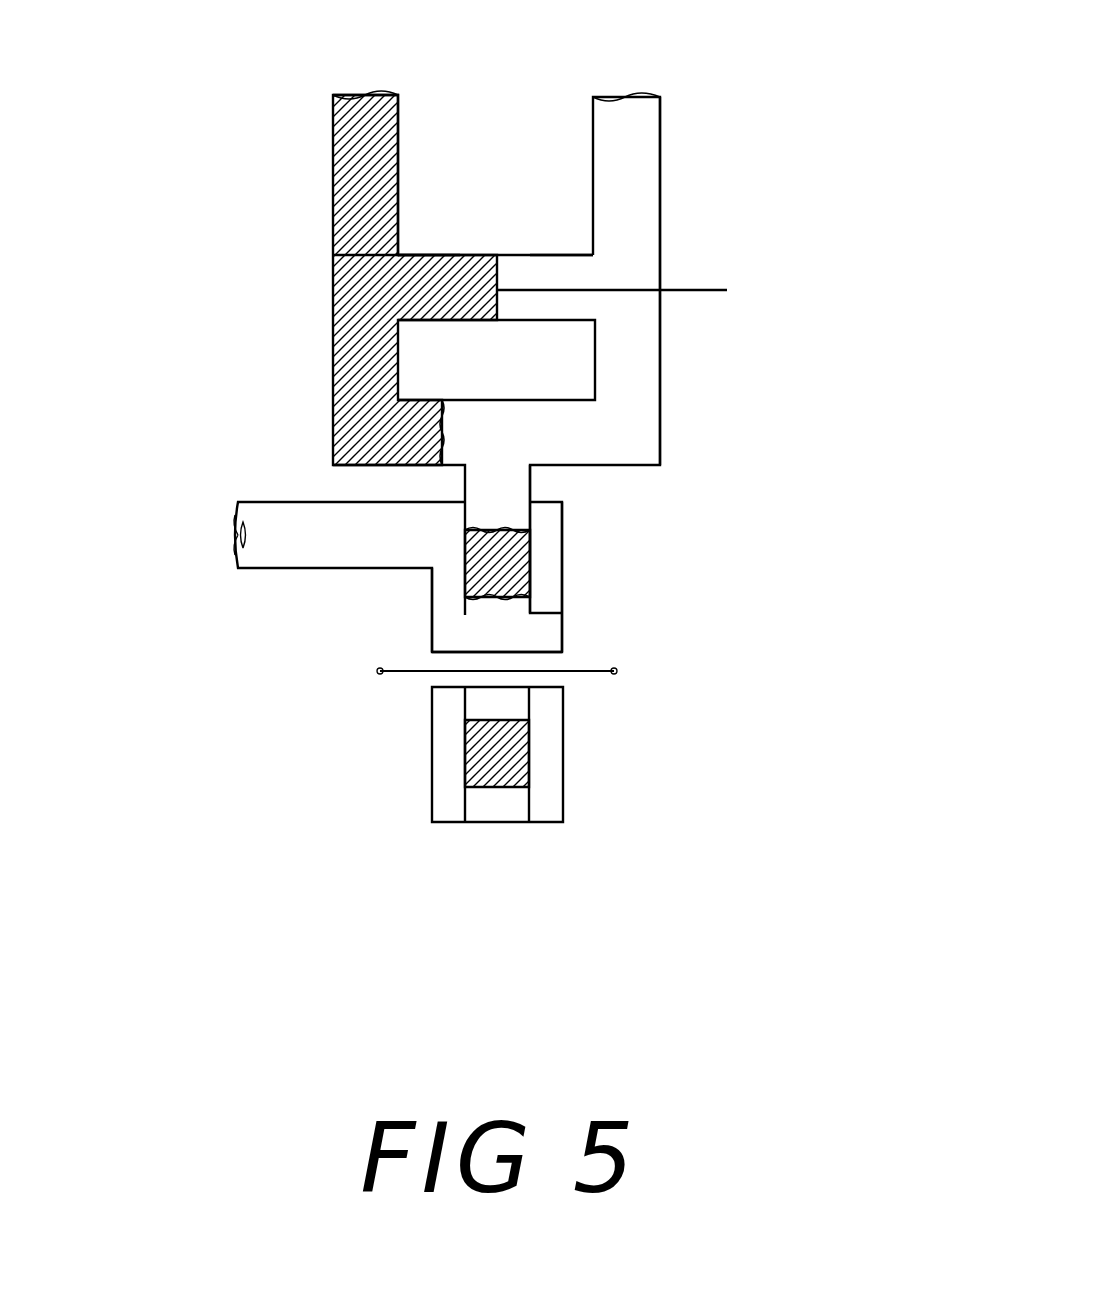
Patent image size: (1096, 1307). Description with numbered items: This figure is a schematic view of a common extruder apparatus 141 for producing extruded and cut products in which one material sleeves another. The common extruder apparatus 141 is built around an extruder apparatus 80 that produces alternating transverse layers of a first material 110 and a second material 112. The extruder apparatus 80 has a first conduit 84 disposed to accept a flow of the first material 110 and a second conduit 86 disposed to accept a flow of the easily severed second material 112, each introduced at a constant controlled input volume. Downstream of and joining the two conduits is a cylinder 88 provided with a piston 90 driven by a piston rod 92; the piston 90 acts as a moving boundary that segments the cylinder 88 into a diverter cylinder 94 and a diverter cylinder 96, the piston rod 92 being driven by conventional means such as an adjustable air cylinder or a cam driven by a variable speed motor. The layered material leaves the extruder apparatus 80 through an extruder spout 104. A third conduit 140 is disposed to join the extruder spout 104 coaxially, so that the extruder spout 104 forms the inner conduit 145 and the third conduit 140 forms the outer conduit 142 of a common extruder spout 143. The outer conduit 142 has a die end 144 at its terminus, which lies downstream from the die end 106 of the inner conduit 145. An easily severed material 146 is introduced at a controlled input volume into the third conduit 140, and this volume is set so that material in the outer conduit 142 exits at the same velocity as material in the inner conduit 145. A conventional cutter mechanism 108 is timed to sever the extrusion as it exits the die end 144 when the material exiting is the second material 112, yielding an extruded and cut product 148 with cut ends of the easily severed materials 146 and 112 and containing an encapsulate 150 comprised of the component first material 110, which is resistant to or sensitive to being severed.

The extruder apparatus 80 is at (693, 407).
The first conduit 84 is at (333, 130).
The second conduit 86 is at (660, 130).
The cylinder 88 is at (498, 213).
The piston 90 is at (497, 280).
The piston rod 92 is at (683, 290).
The diverter cylinder 94 is at (455, 255).
The diverter cylinder 96 is at (535, 255).
The extruder spout 104 is at (532, 483).
The die end 106 is at (562, 615).
The cutter mechanism 108 is at (617, 672).
The first material 110 is at (362, 202).
The second material 112 is at (633, 200).
The third conduit 140 is at (310, 500).
The common extruder apparatus 141 is at (295, 278).
The outer conduit 142 is at (430, 592).
The common extruder spout 143 is at (597, 583).
The die end 144 is at (460, 645).
The inner conduit 145 is at (533, 538).
The easily severed material 146 is at (282, 540).
The extruded and cut product 148 is at (573, 751).
The encapsulate 150 is at (480, 768).